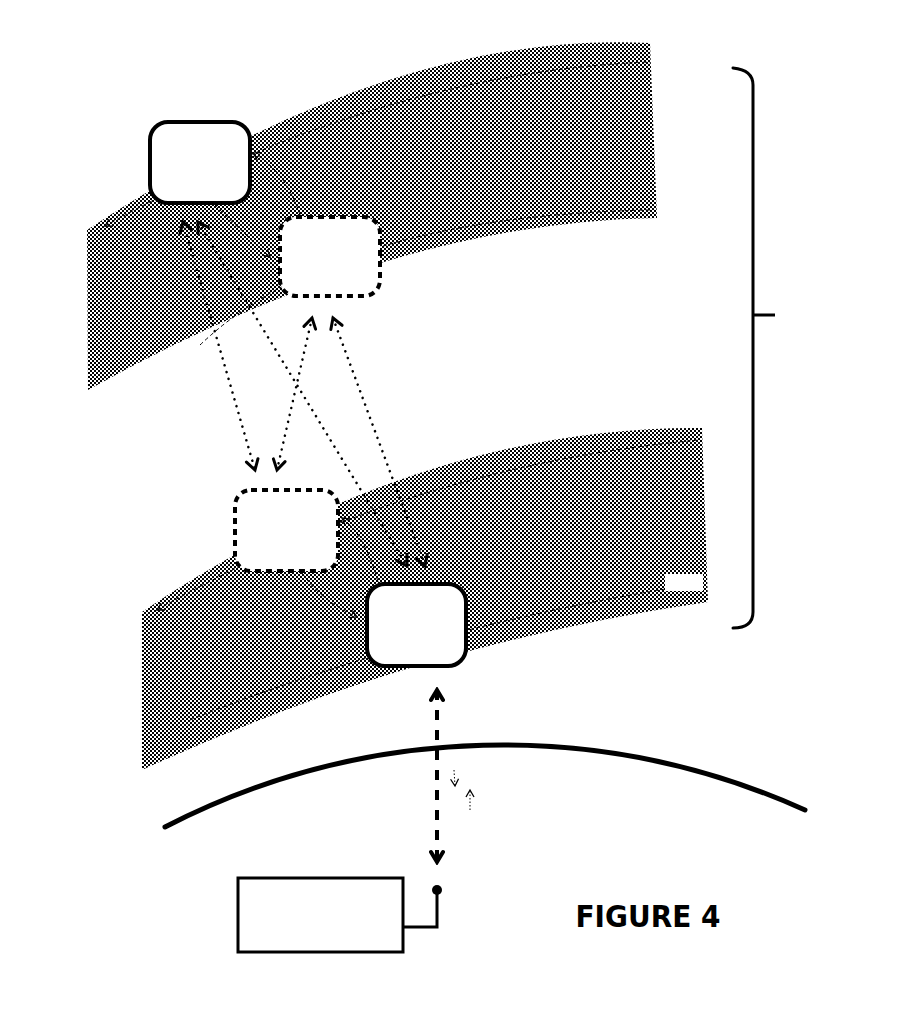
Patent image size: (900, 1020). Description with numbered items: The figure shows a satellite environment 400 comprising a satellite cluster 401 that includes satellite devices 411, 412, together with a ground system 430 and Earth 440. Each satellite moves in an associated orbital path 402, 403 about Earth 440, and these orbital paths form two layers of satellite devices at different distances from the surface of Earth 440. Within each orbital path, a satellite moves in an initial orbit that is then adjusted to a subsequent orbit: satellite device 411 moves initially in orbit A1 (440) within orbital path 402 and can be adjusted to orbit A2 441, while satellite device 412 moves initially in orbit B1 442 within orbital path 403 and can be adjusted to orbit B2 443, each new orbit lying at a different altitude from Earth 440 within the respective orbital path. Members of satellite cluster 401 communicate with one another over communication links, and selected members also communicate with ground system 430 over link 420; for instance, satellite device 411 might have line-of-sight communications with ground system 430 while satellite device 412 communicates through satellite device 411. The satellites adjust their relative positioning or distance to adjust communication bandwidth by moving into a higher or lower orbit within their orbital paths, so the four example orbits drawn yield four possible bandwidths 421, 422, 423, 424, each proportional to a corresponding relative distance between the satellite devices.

The satellite environment 400 is at (843, 172).
The satellite cluster 401 is at (773, 348).
The orbital path 402 is at (425, 599).
The orbital path 403 is at (372, 216).
The satellite device 411 is at (350, 578).
The satellite device 412 is at (265, 209).
The link 420 is at (443, 819).
The bandwidth 421 is at (302, 394).
The bandwidth 422 is at (379, 442).
The bandwidth 423 is at (287, 394).
The bandwidth 424 is at (219, 346).
The ground system 430 is at (340, 915).
The Earth 440 is at (511, 718).
The orbit A2 441 is at (428, 519).
The orbit B1 442 is at (377, 139).
The orbit B2 443 is at (425, 266).